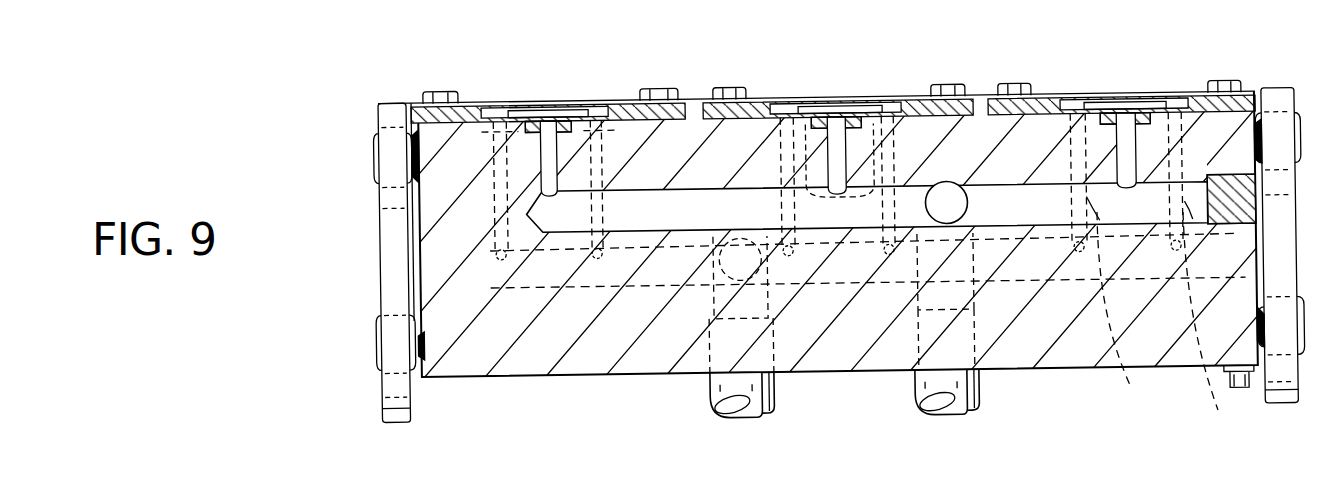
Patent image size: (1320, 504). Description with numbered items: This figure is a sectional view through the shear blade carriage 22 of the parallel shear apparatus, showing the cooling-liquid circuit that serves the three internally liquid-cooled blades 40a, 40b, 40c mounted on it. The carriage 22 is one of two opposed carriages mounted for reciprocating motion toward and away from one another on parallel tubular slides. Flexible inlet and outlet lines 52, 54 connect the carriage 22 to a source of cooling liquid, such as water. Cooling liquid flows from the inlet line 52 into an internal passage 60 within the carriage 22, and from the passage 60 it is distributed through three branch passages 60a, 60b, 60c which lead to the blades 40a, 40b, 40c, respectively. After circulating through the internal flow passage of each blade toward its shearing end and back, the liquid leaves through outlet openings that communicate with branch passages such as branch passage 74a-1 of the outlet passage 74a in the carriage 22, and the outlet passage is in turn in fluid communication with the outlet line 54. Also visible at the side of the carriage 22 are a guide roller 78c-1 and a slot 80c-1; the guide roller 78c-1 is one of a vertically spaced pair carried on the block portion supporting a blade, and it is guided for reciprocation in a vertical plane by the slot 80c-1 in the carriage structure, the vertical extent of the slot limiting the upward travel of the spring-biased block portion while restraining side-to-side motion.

The shear blade carriage 22 is at (380, 280).
The blade 40a is at (1048, 93).
The blade 40b is at (757, 97).
The blade 40c is at (470, 99).
The internal passage 60 is at (1037, 219).
The branch passage 60a is at (1128, 143).
The branch passage 60b is at (838, 127).
The branch passage 60c is at (548, 153).
The inlet line 52 is at (978, 386).
The outlet line 54 is at (773, 388).
The outlet passage branch 74a is at (1214, 329).
The branch passage 74a-1 is at (1128, 317).
The guide roller 78c-1 is at (378, 186).
The slot 80c-1 is at (377, 126).